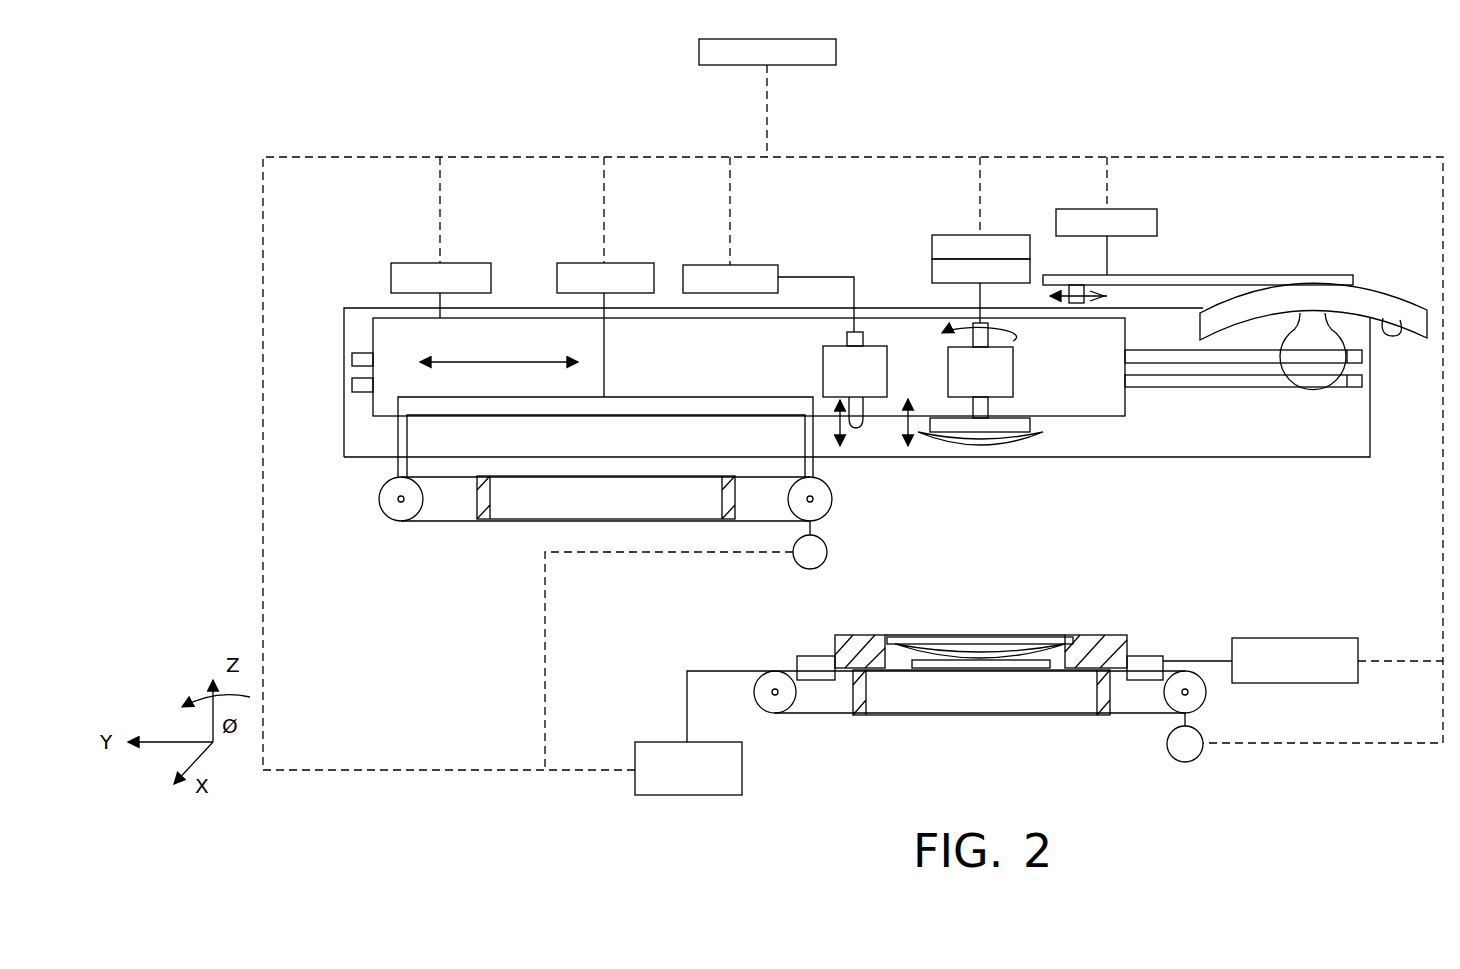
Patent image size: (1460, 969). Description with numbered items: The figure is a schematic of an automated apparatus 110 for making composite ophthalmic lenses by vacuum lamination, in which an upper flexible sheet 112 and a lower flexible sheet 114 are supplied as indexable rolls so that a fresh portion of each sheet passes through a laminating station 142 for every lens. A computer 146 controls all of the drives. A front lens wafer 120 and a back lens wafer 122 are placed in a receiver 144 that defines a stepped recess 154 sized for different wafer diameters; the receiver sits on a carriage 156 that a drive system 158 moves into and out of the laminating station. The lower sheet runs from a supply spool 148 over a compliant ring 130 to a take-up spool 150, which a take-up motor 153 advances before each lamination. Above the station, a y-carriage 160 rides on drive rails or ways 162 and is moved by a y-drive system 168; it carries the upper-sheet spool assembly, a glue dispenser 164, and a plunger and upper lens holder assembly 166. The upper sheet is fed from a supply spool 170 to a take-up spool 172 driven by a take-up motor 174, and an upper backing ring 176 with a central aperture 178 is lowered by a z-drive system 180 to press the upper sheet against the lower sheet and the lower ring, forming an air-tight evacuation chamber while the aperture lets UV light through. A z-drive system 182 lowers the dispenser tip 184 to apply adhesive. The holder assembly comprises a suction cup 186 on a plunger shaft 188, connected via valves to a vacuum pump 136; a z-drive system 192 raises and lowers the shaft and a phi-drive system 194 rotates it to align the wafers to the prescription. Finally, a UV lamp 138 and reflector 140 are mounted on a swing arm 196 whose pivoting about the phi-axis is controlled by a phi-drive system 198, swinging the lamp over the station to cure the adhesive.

The apparatus 110 is at (918, 105).
The upper flexible sheet 112 is at (440, 522).
The lower flexible sheet 114 is at (800, 664).
The front lens wafer 120 is at (948, 663).
The back lens wafer 122 is at (1003, 447).
The compliant ring 130 is at (853, 700).
The vacuum pump 136 is at (742, 778).
The UV lamp 138 is at (1282, 362).
The reflector 140 is at (1380, 290).
The laminating station 142 is at (1043, 598).
The receiver 144 is at (1085, 642).
The computer 146 is at (770, 39).
The supply spool 148 is at (781, 705).
The take-up spool 150 is at (1205, 684).
The take-up motor 153 is at (1167, 744).
The stepped recess 154 is at (930, 630).
The carriage 156 is at (822, 658).
The drive system 158 is at (1296, 638).
The y-carriage 160 is at (371, 330).
The drive rails or ways 162 is at (352, 386).
The glue dispenser 164 is at (815, 370).
The plunger and upper lens holder assembly 166 is at (1016, 374).
The y-drive system 168 is at (463, 264).
The supply spool 170 is at (413, 497).
The take-up spool 172 is at (826, 494).
The take-up motor 174 is at (822, 538).
The upper backing ring 176 is at (735, 500).
The central aperture 178 is at (548, 490).
The z-drive system 180 is at (623, 264).
The z-drive system 182 is at (745, 266).
The dispenser tip 184 is at (862, 416).
The suction cup 186 is at (1017, 424).
The plunger shaft 188 is at (952, 333).
The z-drive system 192 is at (932, 250).
The phi-drive system 194 is at (932, 270).
The swing arm 196 is at (1150, 275).
The phi-drive system 198 is at (1115, 209).